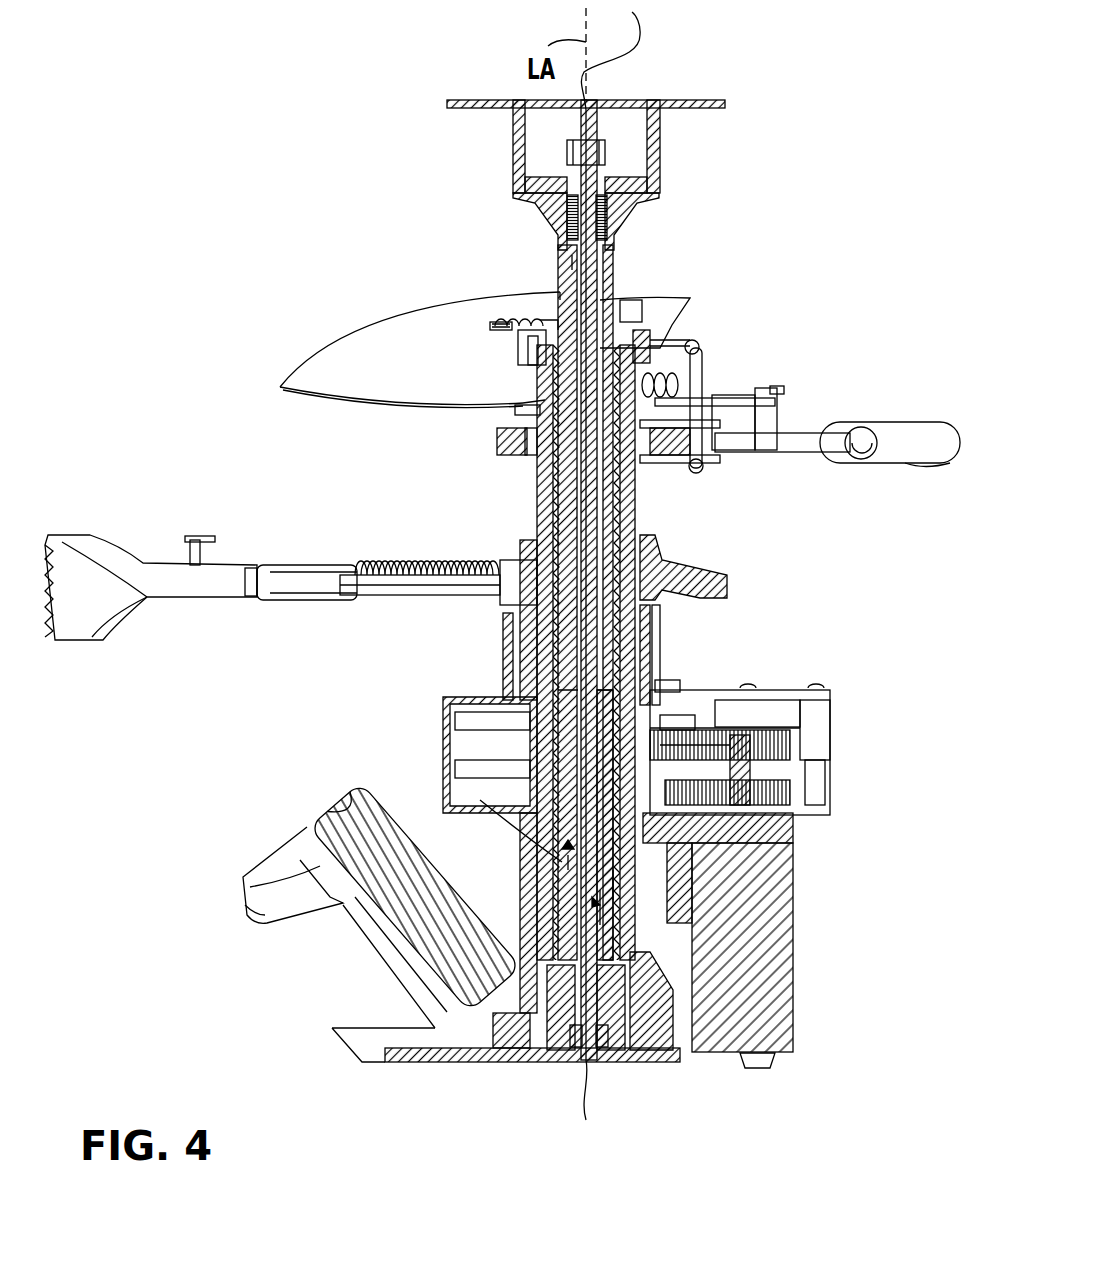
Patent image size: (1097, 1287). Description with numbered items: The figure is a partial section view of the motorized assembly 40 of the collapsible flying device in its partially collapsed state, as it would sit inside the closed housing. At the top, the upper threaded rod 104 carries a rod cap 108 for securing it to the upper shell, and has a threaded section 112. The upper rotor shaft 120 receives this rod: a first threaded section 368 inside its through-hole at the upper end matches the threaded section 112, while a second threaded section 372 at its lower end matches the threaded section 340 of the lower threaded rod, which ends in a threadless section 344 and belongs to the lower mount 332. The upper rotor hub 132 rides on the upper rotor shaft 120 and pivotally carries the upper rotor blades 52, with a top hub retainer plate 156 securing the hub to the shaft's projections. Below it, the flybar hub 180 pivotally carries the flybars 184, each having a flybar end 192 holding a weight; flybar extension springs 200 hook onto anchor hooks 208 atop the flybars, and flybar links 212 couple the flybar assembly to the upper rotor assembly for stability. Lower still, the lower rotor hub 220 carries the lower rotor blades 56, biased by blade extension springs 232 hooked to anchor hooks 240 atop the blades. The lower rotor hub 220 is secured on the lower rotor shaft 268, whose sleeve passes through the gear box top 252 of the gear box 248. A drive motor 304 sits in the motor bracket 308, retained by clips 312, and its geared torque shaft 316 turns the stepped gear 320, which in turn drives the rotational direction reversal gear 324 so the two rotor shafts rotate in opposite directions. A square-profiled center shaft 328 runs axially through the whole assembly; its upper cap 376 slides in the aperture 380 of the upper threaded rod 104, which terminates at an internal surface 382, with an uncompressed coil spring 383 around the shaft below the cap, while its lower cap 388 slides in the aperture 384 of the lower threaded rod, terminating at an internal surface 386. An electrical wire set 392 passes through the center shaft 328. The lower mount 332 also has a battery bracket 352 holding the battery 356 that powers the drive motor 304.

The motorized assembly 40 is at (222, 146).
The upper rotor blades 52 is at (342, 348).
The lower rotor blades 56 is at (135, 558).
The upper threaded rod 104 is at (615, 258).
The rod cap 108 is at (706, 100).
The threaded section 112 is at (566, 497).
The upper rotor shaft 120 is at (634, 497).
The upper rotor hub 132 is at (520, 358).
The top hub retainer plate 156 is at (655, 322).
The flybar hub 180 is at (500, 445).
The flybars 184 is at (789, 454).
The flybar end 192 is at (892, 422).
The flybar extension springs 200 is at (712, 400).
The anchor hooks 208 is at (762, 388).
The flybar links 212 is at (697, 362).
The lower rotor hub 220 is at (718, 580).
The blade extension springs 232 is at (440, 548).
The anchor hooks 240 is at (195, 534).
The gear box 248 is at (830, 710).
The gear box top 252 is at (790, 695).
The lower rotor shaft 268 is at (646, 645).
The drive motor 304 is at (785, 990).
The motor bracket 308 is at (800, 848).
The clips 312 is at (765, 1068).
The geared torque shaft 316 is at (745, 788).
The stepped gear 320 is at (775, 748).
The rotational direction reversal gear 324 is at (710, 735).
The center shaft 328 is at (580, 276).
The lower mount 332 is at (470, 1063).
The threaded section 340 is at (620, 882).
The threadless section 344 is at (557, 707).
The battery bracket 352 is at (270, 855).
The battery 356 is at (325, 800).
The first threaded section 368 is at (508, 328).
The second threaded section 372 is at (630, 935).
The upper cap 376 is at (600, 152).
The aperture 380 is at (572, 264).
The internal surface 382 is at (556, 430).
The coil spring 383 is at (604, 222).
The aperture 384 is at (604, 906).
The internal surface 386 is at (556, 858).
The lower cap 388 is at (602, 1042).
The electrical wire set 392 is at (640, 60).